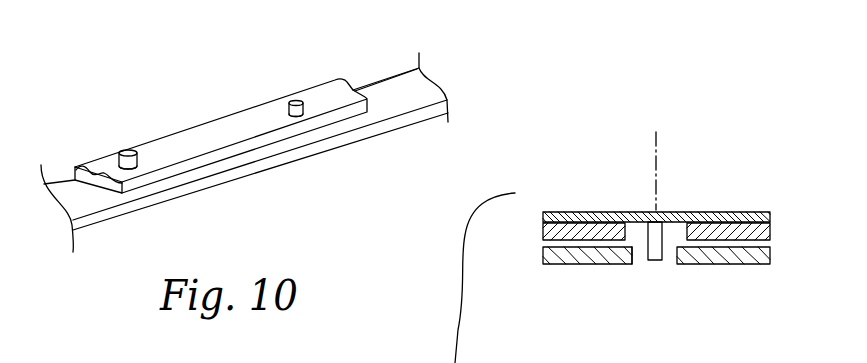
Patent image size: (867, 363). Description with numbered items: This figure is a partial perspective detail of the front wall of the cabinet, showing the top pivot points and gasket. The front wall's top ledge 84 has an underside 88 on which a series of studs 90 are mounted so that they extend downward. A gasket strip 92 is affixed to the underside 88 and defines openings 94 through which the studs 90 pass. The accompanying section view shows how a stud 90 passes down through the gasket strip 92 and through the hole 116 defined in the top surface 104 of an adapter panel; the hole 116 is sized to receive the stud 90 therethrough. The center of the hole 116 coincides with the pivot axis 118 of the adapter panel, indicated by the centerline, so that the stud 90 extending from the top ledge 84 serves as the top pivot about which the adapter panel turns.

The top ledge 84 is at (342, 138).
The underside 88 is at (382, 103).
The stud 90 is at (130, 148).
The gasket strip 92 is at (192, 143).
The opening 94 is at (117, 153).
The top surface 104 is at (713, 258).
The hole 116 is at (627, 253).
The pivot axis 118 is at (657, 143).